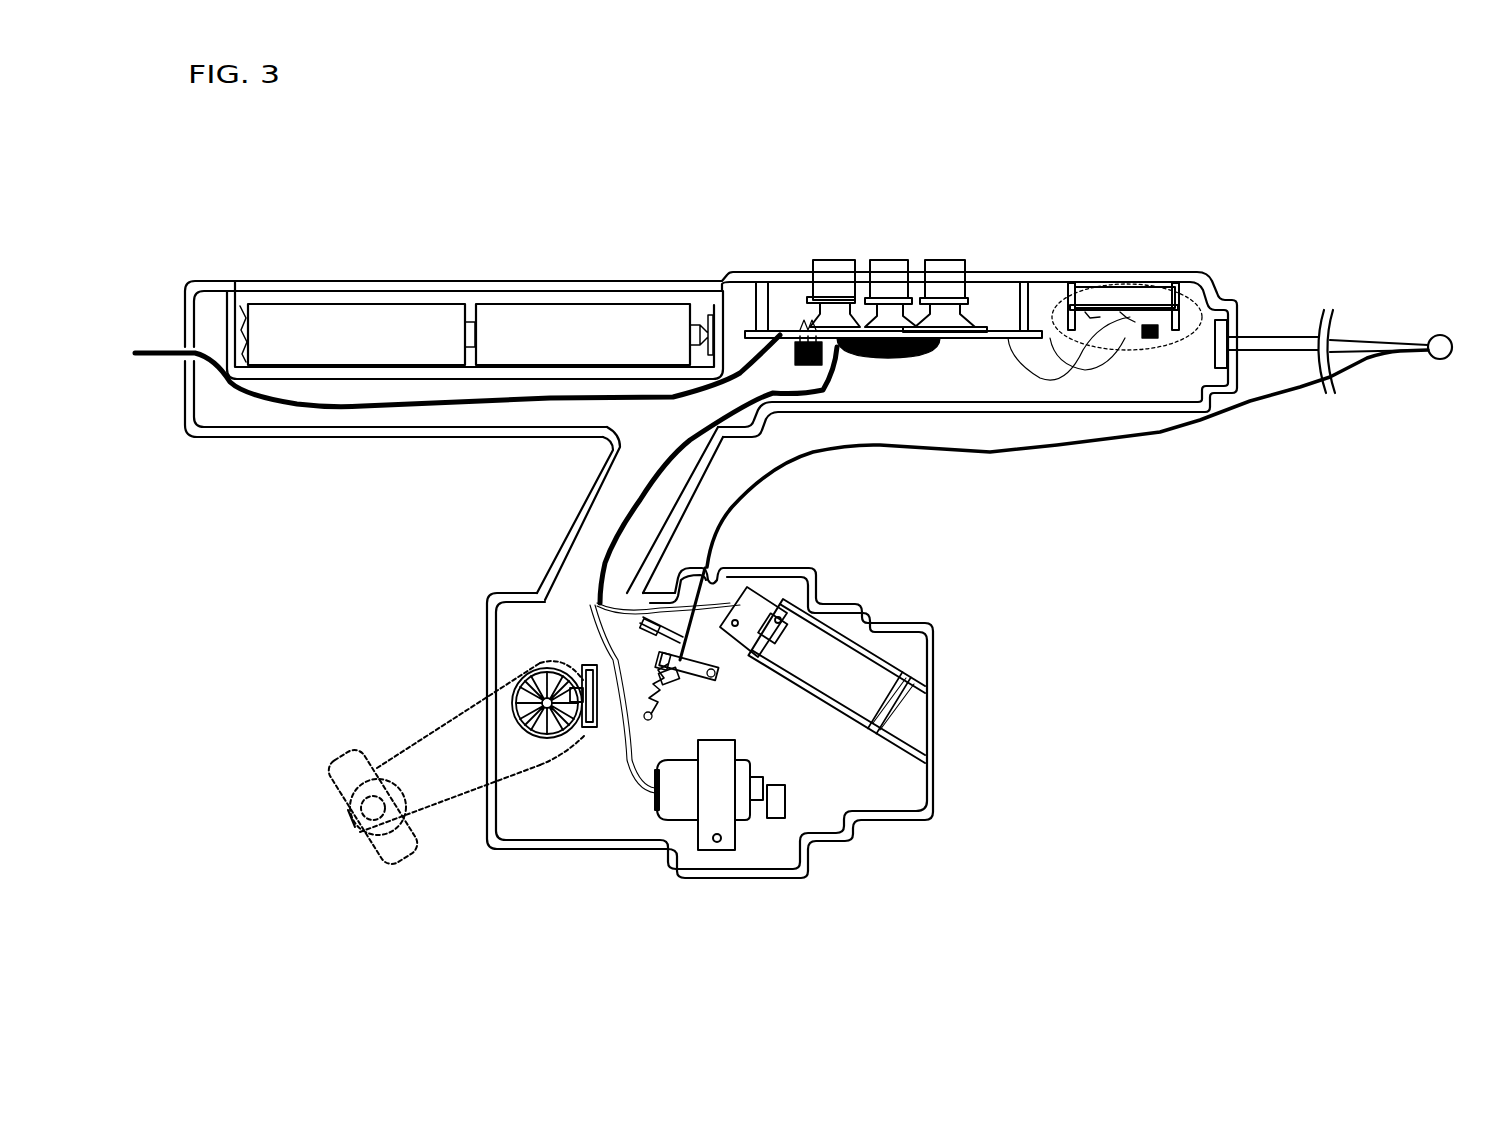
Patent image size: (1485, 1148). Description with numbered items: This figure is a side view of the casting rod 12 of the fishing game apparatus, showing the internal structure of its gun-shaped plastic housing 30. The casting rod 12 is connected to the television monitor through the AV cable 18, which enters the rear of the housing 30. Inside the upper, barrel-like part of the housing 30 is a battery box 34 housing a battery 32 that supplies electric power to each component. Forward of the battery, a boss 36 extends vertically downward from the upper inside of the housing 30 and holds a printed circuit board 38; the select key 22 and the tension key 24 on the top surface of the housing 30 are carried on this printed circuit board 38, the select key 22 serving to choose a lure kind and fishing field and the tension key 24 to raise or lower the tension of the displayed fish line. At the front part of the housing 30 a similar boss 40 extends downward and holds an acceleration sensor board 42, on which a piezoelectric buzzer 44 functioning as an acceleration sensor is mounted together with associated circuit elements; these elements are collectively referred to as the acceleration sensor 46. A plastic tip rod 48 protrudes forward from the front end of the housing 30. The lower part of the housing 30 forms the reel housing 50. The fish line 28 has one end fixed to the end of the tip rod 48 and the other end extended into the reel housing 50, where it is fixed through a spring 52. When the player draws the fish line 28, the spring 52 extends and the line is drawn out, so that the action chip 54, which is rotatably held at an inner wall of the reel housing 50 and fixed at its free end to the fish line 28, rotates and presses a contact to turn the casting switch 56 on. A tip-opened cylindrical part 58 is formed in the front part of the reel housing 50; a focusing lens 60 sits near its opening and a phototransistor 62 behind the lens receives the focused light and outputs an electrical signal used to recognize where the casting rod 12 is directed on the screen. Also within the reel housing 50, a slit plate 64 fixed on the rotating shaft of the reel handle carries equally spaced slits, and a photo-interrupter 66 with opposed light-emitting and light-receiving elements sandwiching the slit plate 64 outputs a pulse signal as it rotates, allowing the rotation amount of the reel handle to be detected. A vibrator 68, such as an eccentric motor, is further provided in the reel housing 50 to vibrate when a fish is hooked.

The casting rod 12 is at (567, 132).
The AV cable 18 is at (287, 410).
The select key 22 is at (890, 263).
The tension key 24 is at (837, 265).
The fish line 28 is at (1057, 445).
The housing 30 is at (483, 283).
The battery 32 is at (373, 333).
The battery box 34 is at (613, 293).
The boss 36 is at (757, 293).
The printed circuit board 38 is at (748, 330).
The boss 40 is at (1070, 297).
The acceleration sensor board 42 is at (1153, 307).
The piezoelectric buzzer 44 is at (1130, 307).
The acceleration sensor 46 is at (1220, 280).
The tip rod 48 is at (1275, 347).
The reel housing 50 is at (487, 603).
The spring 52 is at (683, 700).
The action chip 54 is at (712, 680).
The casting switch 56 is at (720, 655).
The cylindrical part 58 is at (936, 690).
The focusing lens 60 is at (935, 708).
The phototransistor 62 is at (790, 627).
The slit plate 64 is at (550, 733).
The photo-interrupter 66 is at (580, 667).
The vibrator 68 is at (757, 797).